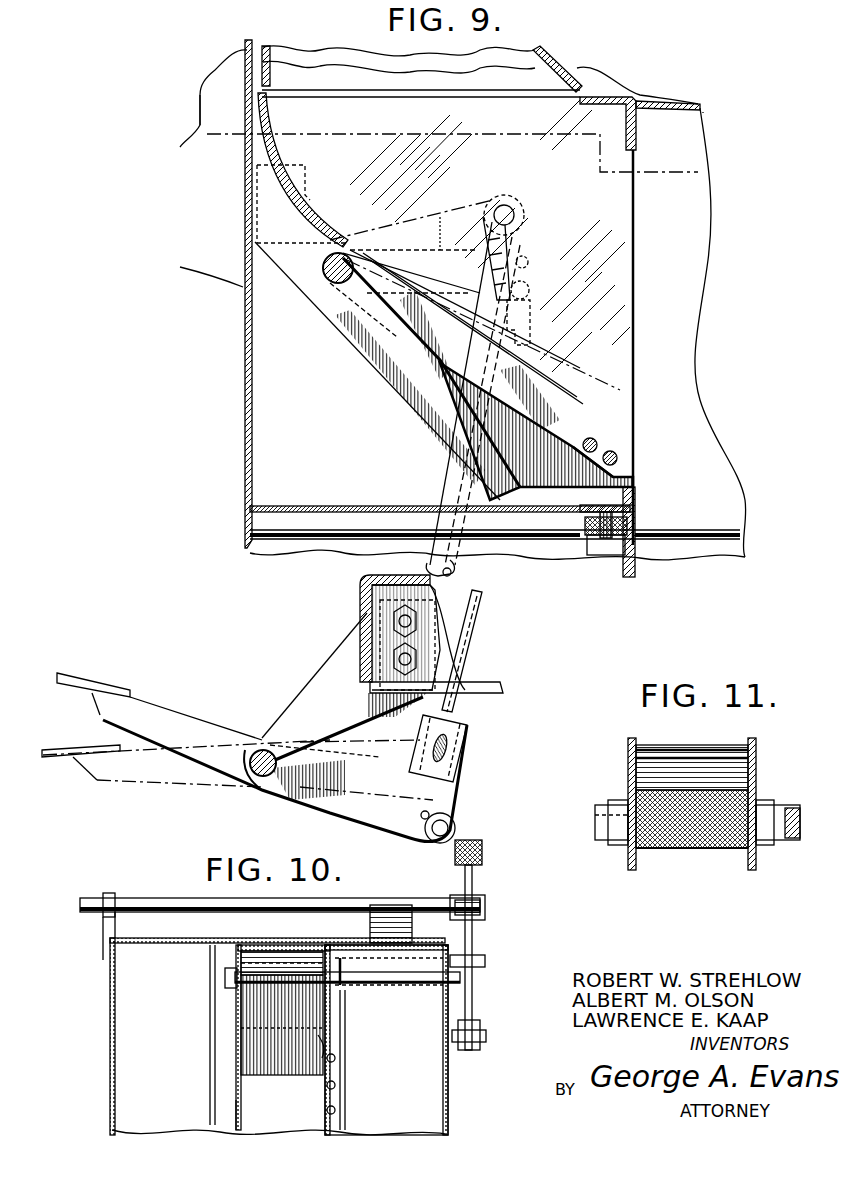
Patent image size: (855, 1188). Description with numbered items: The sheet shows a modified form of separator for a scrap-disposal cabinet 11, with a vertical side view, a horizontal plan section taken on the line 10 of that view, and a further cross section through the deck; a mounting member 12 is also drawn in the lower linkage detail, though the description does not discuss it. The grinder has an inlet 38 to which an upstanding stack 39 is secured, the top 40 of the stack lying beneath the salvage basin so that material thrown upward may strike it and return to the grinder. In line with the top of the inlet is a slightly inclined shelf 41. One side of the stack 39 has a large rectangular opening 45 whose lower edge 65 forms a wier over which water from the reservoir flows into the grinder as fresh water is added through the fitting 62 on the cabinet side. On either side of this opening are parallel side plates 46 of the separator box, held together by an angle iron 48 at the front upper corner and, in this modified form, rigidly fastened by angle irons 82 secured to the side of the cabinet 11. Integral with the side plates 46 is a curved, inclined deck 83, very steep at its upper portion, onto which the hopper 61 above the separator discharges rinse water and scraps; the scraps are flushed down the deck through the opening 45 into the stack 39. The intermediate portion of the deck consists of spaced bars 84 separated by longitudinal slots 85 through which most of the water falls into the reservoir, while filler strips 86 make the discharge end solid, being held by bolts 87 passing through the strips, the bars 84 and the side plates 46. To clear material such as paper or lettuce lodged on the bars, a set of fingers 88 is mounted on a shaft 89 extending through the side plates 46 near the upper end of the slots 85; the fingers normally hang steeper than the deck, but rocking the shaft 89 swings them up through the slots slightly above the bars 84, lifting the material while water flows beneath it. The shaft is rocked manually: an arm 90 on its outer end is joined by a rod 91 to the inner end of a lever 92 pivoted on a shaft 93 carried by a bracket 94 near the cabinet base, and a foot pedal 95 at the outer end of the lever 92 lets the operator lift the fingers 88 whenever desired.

In FIG. 9, the section line 10— 10 is at (223, 134).
In FIG. 9, the cabinet 11 is at (245, 332).
In FIG. 10, the cabinet 11 is at (110, 1002).
In FIG. 9, the mounting bracket 12 is at (365, 596).
In FIG. 9, the inlet 38 is at (636, 572).
In FIG. 9, the stack 39 is at (681, 182).
In FIG. 10, the stack 39 is at (236, 1122).
In FIG. 9, the top of stack 40 is at (696, 106).
In FIG. 9, the shelf 41 is at (332, 506).
In FIG. 10, the shelf 41 is at (238, 1058).
In FIG. 9, the opening 45 is at (634, 170).
In FIG. 9, the side plates 46 is at (519, 257).
In FIG. 10, the side plates 46 is at (238, 1025).
In FIG. 11, the side plates 46 is at (756, 774).
In FIG. 9, the angle iron 48 is at (608, 123).
In FIG. 9, the hopper 61 is at (544, 69).
In FIG. 9, the fitting 62 is at (214, 154).
In FIG. 10, the fitting 62 is at (391, 909).
In FIG. 9, the lower edge (wier) 65 is at (636, 492).
In FIG. 9, the angle irons 82 is at (303, 170).
In FIG. 10, the angle irons 82 is at (240, 945).
In FIG. 9, the deck 83 is at (308, 180).
In FIG. 10, the deck 83 is at (345, 965).
In FIG. 11, the deck 83 is at (628, 768).
In FIG. 9, the bars 84 is at (540, 405).
In FIG. 10, the bars 84 is at (245, 990).
In FIG. 11, the bars 84 is at (653, 846).
In FIG. 10, the slots 85 is at (330, 1020).
In FIG. 9, the filler strips 86 is at (633, 470).
In FIG. 10, the filler strips 86 is at (332, 1058).
In FIG. 11, the filler strips 86 is at (735, 850).
In FIG. 9, the bolts 87 is at (597, 442).
In FIG. 10, the bolts 87 is at (338, 1080).
In FIG. 9, the fingers 88 is at (417, 371).
In FIG. 11, the fingers 88 is at (630, 801).
In FIG. 9, the shaft 89 is at (322, 265).
In FIG. 10, the shaft 89 is at (398, 985).
In FIG. 11, the shaft 89 is at (786, 820).
In FIG. 9, the arm 90 is at (475, 291).
In FIG. 10, the arm 90 is at (472, 1018).
In FIG. 9, the rod 91 is at (489, 399).
In FIG. 9, the lever 92 is at (285, 770).
In FIG. 10, the lever 92 is at (473, 950).
In FIG. 9, the shaft 93 is at (262, 750).
In FIG. 10, the shaft 93 is at (160, 899).
In FIG. 9, the bracket 94 is at (336, 658).
In FIG. 10, the bracket 94 is at (455, 914).
In FIG. 9, the foot pedal 95 is at (132, 693).
In FIG. 10, the foot pedal 95 is at (482, 858).